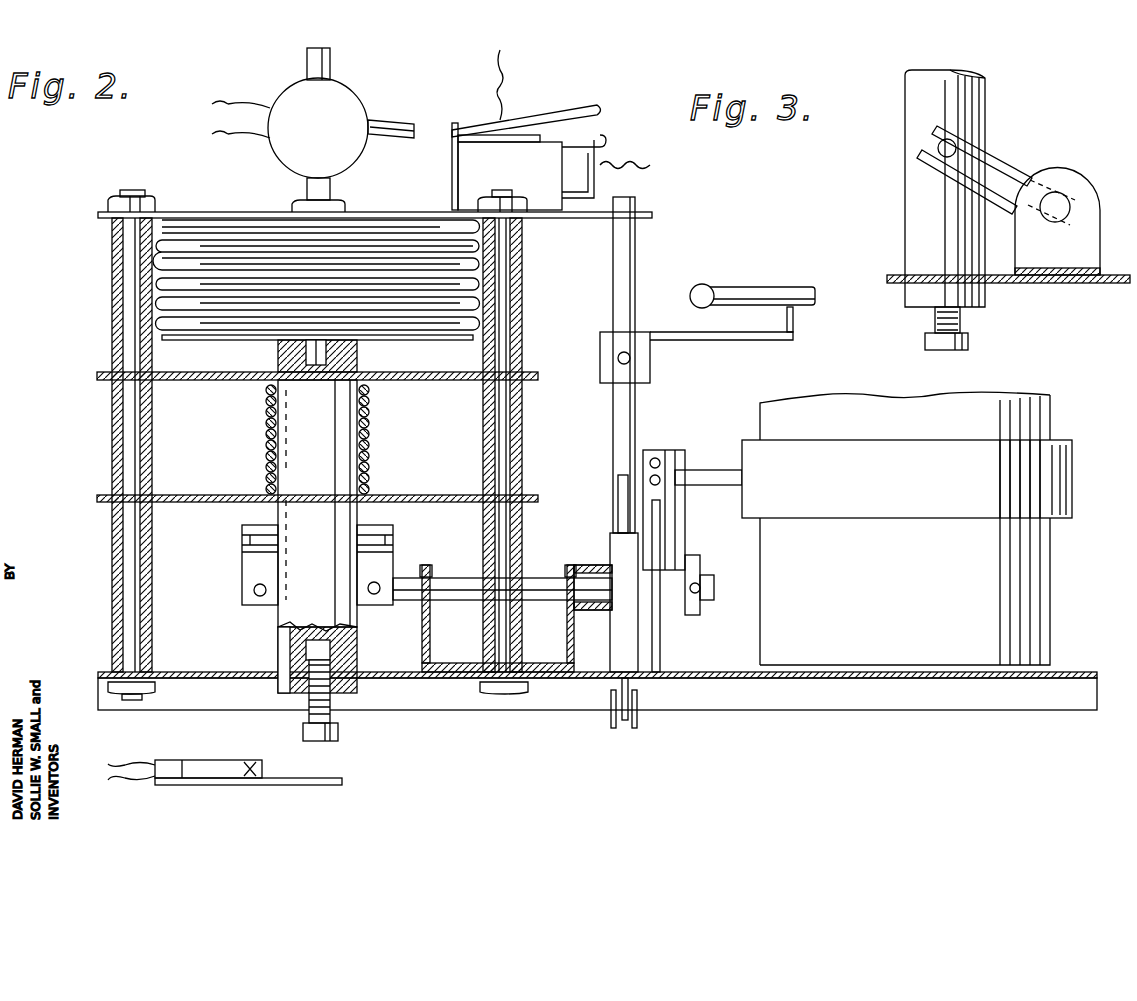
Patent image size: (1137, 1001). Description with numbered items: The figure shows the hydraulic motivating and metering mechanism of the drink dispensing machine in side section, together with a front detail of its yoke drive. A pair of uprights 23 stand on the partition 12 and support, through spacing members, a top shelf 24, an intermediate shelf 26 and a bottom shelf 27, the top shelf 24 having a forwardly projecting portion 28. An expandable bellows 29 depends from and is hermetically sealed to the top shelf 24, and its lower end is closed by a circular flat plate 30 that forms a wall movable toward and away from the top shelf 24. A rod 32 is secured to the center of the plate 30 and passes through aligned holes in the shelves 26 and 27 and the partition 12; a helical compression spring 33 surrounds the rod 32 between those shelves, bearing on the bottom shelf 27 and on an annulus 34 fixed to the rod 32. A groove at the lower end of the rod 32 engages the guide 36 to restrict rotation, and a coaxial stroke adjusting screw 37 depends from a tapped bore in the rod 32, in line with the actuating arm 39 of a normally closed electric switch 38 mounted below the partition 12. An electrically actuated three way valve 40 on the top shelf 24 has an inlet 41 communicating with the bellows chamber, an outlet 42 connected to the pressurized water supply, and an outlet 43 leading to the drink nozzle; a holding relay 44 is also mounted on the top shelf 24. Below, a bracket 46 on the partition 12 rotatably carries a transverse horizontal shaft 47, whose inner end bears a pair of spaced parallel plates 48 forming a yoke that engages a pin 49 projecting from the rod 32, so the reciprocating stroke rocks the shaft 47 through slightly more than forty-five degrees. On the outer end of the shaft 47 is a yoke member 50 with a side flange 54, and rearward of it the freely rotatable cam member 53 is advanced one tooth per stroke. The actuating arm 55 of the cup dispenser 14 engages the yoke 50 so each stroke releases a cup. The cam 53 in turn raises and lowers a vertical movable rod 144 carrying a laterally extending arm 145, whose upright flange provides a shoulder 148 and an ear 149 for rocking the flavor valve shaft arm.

In FIG. 2, the partition 12 is at (170, 672).
In FIG. 2, the cup dispenser 14 is at (1050, 575).
In FIG. 2, the uprights 23 is at (118, 300).
In FIG. 2, the top shelf 24 is at (92, 212).
In FIG. 2, the intermediate shelf 26 is at (90, 372).
In FIG. 2, the bottom shelf 27 is at (90, 495).
In FIG. 2, the forwardly projecting portion 28 is at (590, 222).
In FIG. 2, the expandable bellows 29 is at (186, 240).
In FIG. 2, the circular flat plate 30 is at (440, 340).
In FIG. 2, the rod 32 is at (340, 432).
In FIG. 3, the rod 32 is at (972, 108).
In FIG. 2, the helical compression spring 33 is at (370, 455).
In FIG. 2, the annulus 34 is at (362, 380).
In FIG. 2, the guide 36 is at (226, 672).
In FIG. 2, the stroke adjusting screw 37 is at (338, 724).
In FIG. 2, the electric switch 38 is at (225, 760).
In FIG. 2, the actuating arm 39 is at (312, 786).
In FIG. 2, the three way valve 40 is at (345, 102).
In FIG. 2, the inlet 41 is at (332, 192).
In FIG. 2, the outlet 42 is at (330, 66).
In FIG. 2, the outlet 43 is at (388, 120).
In FIG. 2, the holding relay 44 is at (476, 155).
In FIG. 2, the bracket 46 is at (422, 640).
In FIG. 3, the bracket 46 is at (1088, 232).
In FIG. 2, the transverse horizontal shaft 47 is at (404, 578).
In FIG. 2, the parallel plates 48 is at (242, 527).
In FIG. 3, the parallel plates 48 is at (996, 158).
In FIG. 2, the pin 49 is at (378, 537).
In FIG. 3, the pin 49 is at (938, 142).
In FIG. 2, the yoke member 50 is at (680, 510).
In FIG. 2, the cam member 53 is at (660, 650).
In FIG. 2, the flange 54 is at (672, 450).
In FIG. 2, the actuating arm 55 is at (703, 470).
In FIG. 2, the vertical movable rod 144 is at (628, 398).
In FIG. 2, the laterally extending arm 145 is at (700, 340).
In FIG. 2, the shoulder 148 is at (793, 322).
In FIG. 2, the ear 149 is at (792, 287).